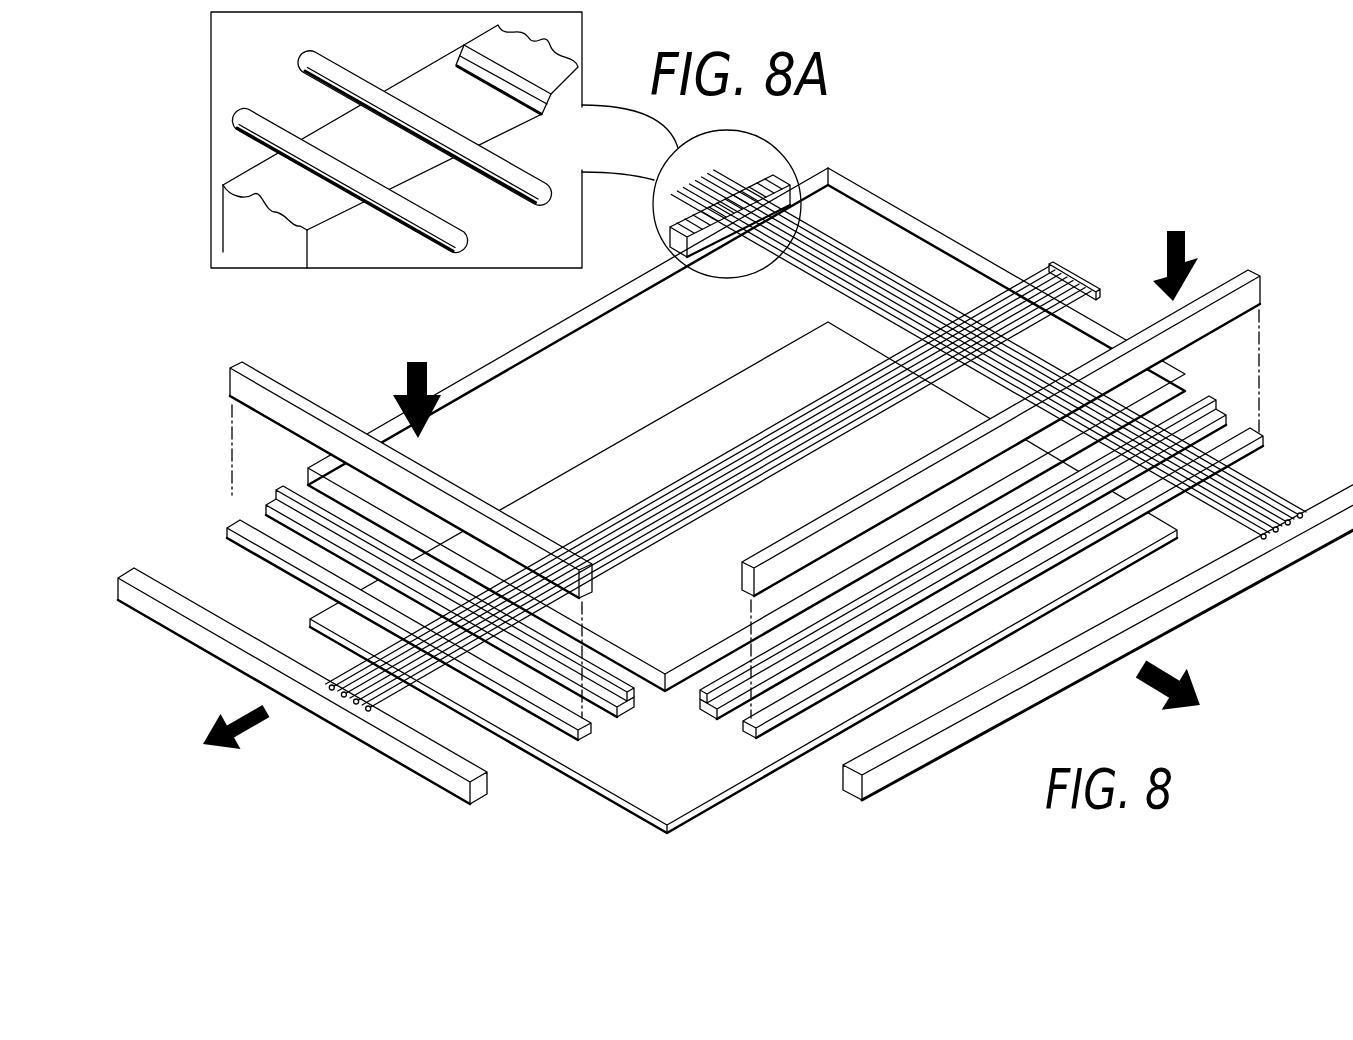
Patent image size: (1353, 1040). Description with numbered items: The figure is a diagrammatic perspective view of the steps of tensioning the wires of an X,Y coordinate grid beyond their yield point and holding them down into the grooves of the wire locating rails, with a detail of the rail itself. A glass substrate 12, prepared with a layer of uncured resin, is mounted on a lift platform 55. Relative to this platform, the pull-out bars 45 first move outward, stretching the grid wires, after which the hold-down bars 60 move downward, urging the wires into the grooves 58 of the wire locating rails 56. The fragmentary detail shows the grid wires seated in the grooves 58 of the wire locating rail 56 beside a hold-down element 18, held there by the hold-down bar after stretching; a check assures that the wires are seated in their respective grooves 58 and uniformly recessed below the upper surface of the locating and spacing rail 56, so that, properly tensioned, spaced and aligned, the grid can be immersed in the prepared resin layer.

In FIG. 8, the glass substrate 12 is at (766, 418).
In FIG. 8A, the conductor strip 18 is at (303, 62).
In FIG. 8, the pull-out bars 45 is at (377, 752).
In FIG. 8, the lift platform 55 is at (942, 248).
In FIG. 8, the wire locating rail 56 is at (707, 678).
In FIG. 8A, the wire locating rail 56 is at (448, 180).
In FIG. 8A, the grooves 58 is at (384, 90).
In FIG. 8, the hold-down bars 60 is at (540, 536).